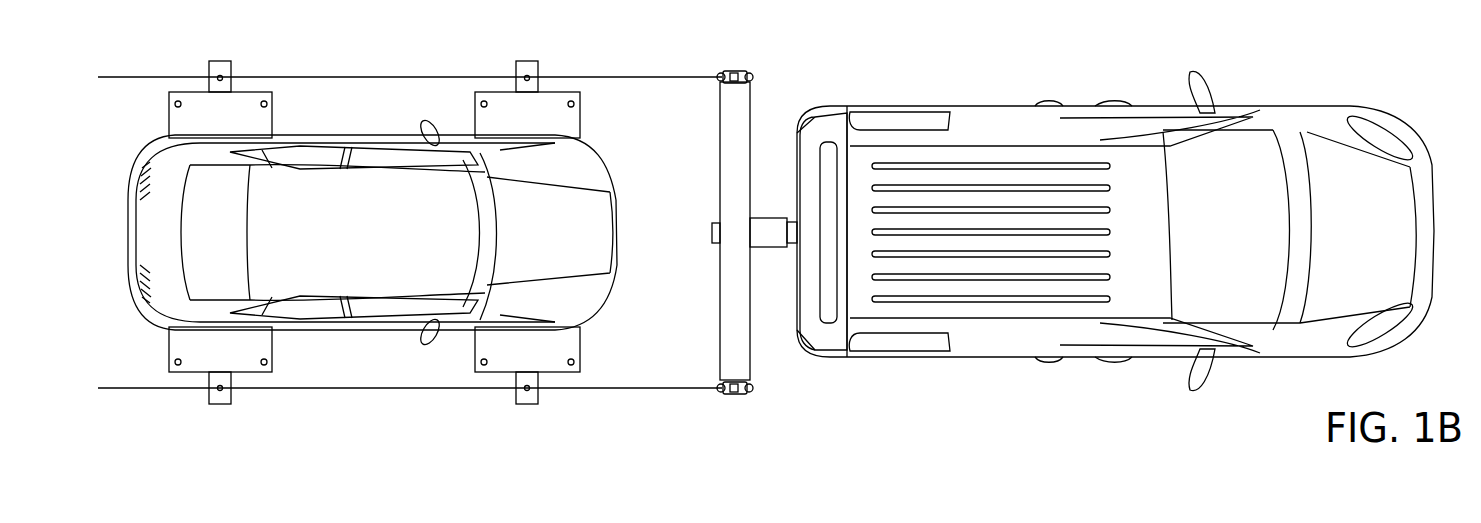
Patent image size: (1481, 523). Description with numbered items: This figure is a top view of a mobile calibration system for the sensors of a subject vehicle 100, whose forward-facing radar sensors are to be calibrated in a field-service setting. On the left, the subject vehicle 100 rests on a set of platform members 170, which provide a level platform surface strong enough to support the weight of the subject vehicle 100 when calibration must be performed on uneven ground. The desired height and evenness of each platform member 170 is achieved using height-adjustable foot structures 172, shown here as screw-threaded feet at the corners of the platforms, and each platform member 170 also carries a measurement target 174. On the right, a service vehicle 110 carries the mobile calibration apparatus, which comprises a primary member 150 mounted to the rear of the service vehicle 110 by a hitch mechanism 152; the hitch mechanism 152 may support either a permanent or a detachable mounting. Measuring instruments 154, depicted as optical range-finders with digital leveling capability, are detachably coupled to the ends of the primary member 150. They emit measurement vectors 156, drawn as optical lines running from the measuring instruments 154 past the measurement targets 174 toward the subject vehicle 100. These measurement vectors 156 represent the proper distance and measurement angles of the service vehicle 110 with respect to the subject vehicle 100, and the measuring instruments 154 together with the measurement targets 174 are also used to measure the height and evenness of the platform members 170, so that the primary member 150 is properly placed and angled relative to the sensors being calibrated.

The subject vehicle 100 is at (309, 244).
The service vehicle 110 is at (997, 105).
The primary member 150 is at (720, 150).
The hitch mechanism 152 is at (712, 237).
The measuring instruments 154 is at (737, 69).
The measurement vectors 156 is at (672, 74).
The platform members 170 is at (199, 361).
The height-adjustable foot structures 172 is at (174, 104).
The measurement targets 174 is at (220, 70).